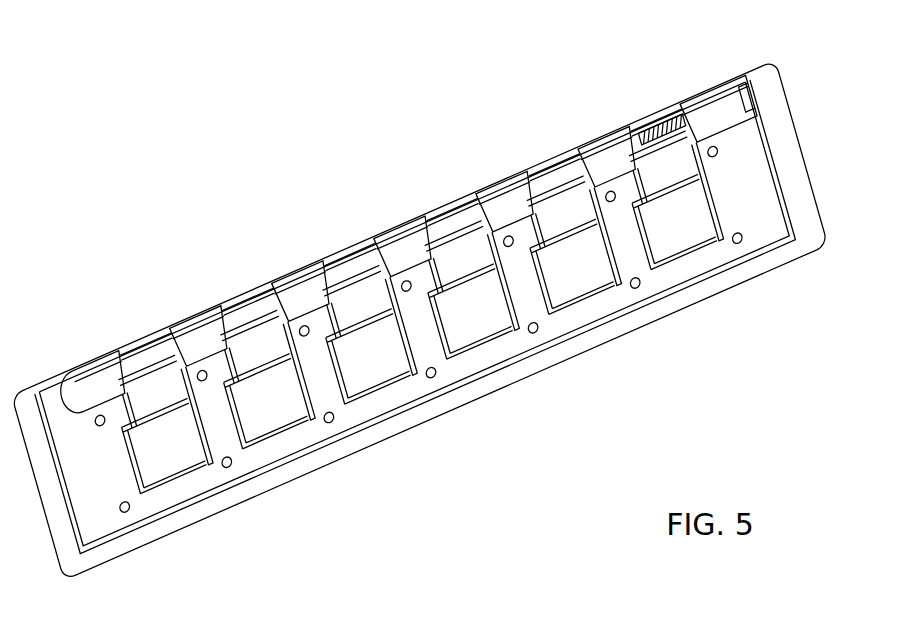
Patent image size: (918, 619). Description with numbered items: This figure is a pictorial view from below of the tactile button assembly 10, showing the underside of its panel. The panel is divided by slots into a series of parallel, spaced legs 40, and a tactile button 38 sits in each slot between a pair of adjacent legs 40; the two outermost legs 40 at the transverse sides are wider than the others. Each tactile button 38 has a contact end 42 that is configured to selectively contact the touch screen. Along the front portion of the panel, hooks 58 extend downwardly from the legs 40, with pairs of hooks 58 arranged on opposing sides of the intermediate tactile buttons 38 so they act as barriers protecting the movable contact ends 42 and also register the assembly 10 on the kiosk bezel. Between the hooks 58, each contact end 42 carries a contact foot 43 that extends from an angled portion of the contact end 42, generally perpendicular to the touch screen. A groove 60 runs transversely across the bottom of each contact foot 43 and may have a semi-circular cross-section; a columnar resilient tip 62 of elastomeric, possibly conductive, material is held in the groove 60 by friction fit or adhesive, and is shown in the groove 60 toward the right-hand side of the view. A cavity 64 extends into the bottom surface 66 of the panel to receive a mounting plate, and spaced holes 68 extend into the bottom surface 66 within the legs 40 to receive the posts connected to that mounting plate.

The tactile button assembly 10 is at (276, 148).
The tactile button 38 is at (137, 440).
The leg 40 is at (78, 508).
The contact end 42 is at (117, 340).
The contact foot 43 is at (152, 343).
The hook 58 is at (89, 385).
The groove 60 is at (168, 355).
The resilient tip 62 is at (660, 129).
The cavity 64 is at (780, 205).
The bottom surface 66 is at (758, 156).
The hole 68 is at (102, 427).